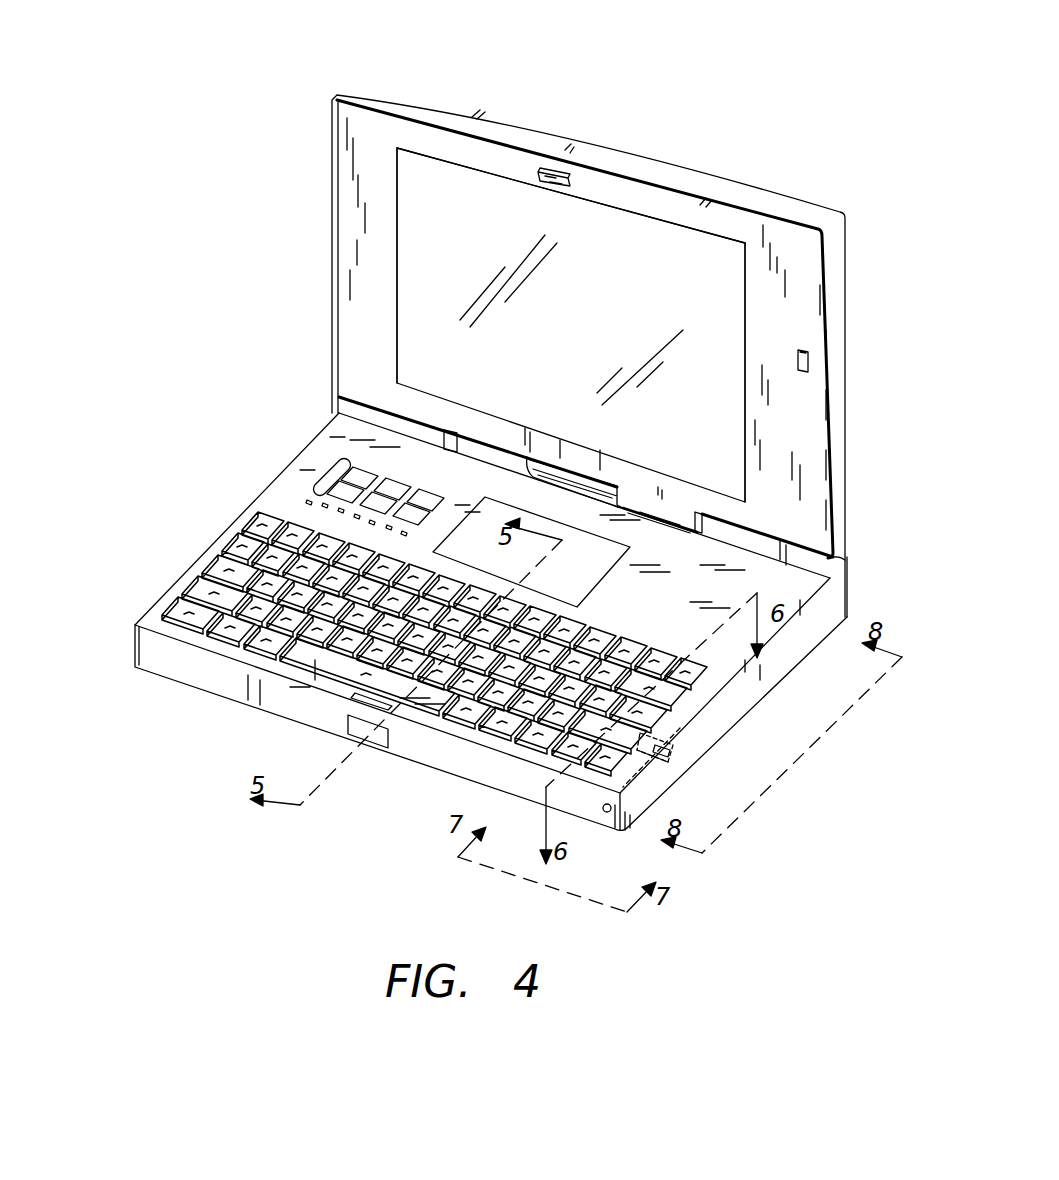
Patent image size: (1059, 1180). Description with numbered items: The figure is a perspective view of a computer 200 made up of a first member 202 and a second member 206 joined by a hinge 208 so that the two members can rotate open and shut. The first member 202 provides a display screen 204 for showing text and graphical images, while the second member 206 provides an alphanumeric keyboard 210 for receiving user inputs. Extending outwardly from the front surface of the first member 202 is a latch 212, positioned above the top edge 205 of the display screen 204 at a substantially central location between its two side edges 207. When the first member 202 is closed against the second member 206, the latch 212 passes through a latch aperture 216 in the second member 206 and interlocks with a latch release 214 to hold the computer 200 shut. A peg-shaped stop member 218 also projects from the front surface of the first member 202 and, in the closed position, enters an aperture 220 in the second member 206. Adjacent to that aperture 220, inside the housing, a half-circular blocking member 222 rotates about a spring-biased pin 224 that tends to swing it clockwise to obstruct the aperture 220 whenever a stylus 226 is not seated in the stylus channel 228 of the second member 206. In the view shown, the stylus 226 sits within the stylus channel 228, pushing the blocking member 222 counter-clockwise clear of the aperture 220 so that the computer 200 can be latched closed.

The computer 200 is at (703, 62).
The first member 202 is at (623, 178).
The display screen 204 is at (425, 222).
The top edge 205 is at (670, 216).
The side edges 207 is at (390, 285).
The latch 212 is at (568, 166).
The stop member 218 is at (812, 352).
The hinge 208 is at (842, 565).
The second member 206 is at (162, 660).
The alphanumeric keyboard 210 is at (228, 548).
The latch release 214 is at (368, 738).
The latch aperture 216 is at (368, 702).
The aperture 220 is at (668, 750).
The blocking member 222 is at (648, 752).
The pin 224 is at (672, 740).
The stylus 226 is at (603, 814).
The stylus channel 228 is at (648, 783).